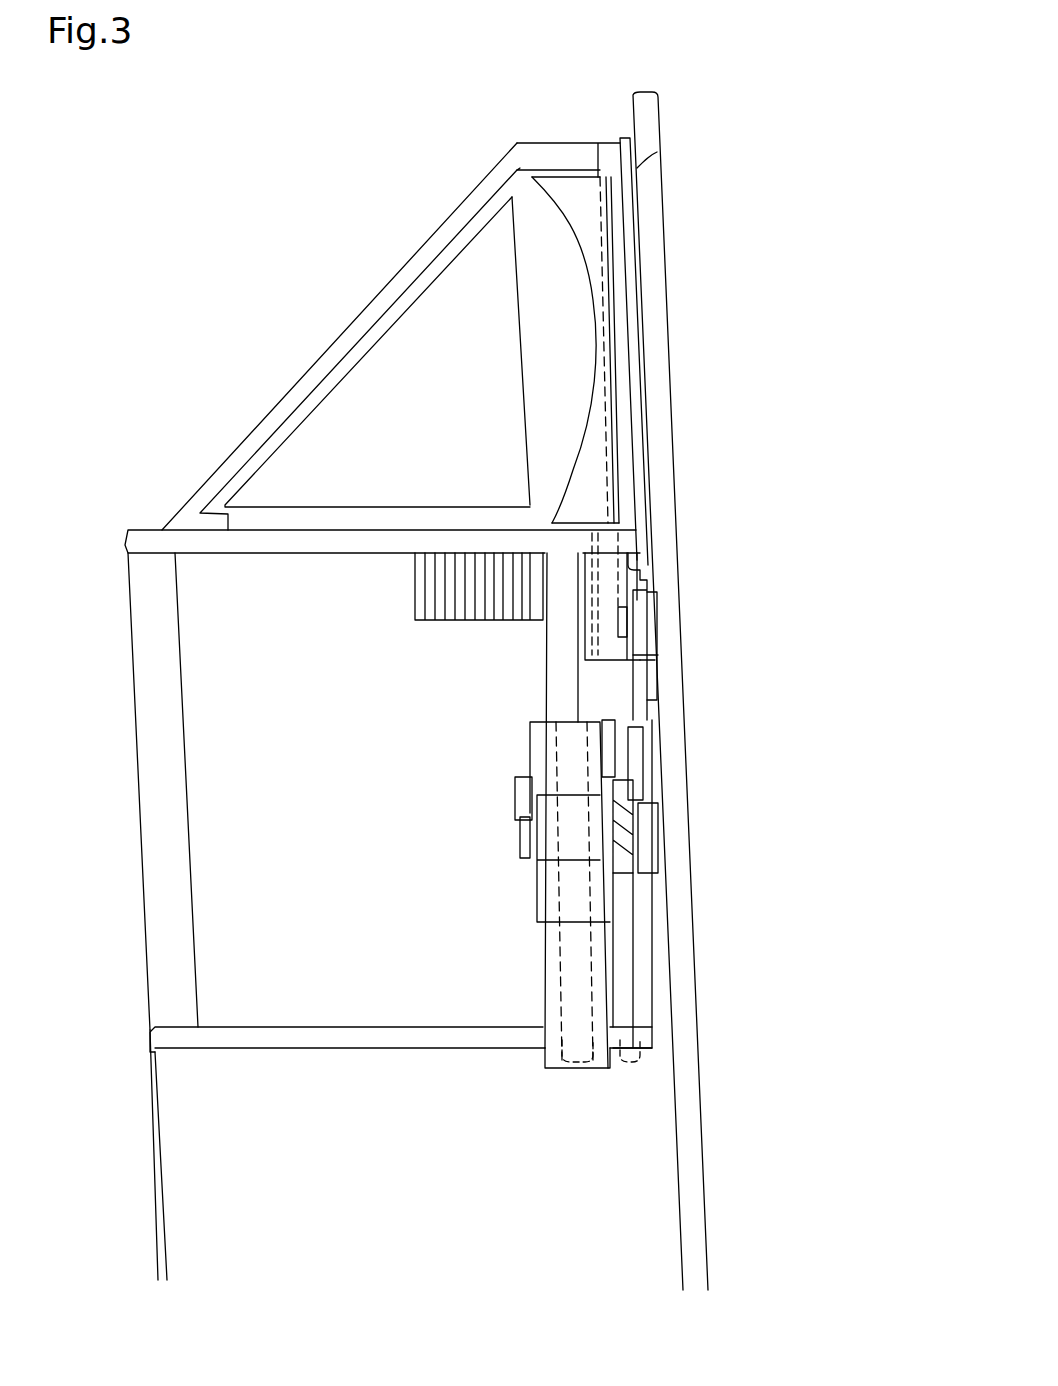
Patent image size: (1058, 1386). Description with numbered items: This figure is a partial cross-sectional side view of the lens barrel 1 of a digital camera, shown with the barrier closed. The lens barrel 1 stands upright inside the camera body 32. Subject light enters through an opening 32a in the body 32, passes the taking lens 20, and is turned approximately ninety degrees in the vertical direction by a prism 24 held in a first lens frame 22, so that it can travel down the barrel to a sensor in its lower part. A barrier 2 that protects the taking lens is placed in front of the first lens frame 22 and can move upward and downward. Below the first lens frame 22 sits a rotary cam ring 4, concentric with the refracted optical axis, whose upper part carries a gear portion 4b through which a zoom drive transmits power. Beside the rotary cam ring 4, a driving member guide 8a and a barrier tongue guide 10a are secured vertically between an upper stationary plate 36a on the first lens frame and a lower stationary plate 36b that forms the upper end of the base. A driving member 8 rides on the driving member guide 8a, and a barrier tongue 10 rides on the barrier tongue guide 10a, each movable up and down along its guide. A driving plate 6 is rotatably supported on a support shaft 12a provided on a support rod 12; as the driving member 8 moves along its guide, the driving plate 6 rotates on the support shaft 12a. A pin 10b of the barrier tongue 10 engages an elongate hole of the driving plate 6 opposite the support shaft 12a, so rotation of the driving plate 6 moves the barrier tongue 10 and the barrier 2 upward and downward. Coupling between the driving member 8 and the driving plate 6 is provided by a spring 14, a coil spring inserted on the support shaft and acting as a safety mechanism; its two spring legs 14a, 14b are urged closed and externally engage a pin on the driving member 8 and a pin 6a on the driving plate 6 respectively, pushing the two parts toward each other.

The lens barrel 1 is at (426, 145).
The barrier 2 is at (627, 200).
The rotary cam ring 4 is at (200, 935).
The gear portion 4b is at (420, 590).
The driving plate 6 is at (650, 665).
The pin 6a is at (640, 810).
The driving member 8 is at (540, 762).
The driving member guide 8a is at (570, 688).
The barrier tongue 10 is at (635, 583).
The barrier tongue guide 10a is at (630, 995).
The pin 10b is at (655, 615).
The support rod 12 is at (548, 990).
The support shaft 12a is at (518, 835).
The spring 14 is at (600, 905).
The spring leg 14a is at (620, 775).
The spring leg 14b is at (628, 735).
The taking lens 20 is at (617, 343).
The first lens frame 22 is at (557, 152).
The prism 24 is at (422, 380).
The body 32 is at (647, 120).
The opening 32a is at (660, 405).
The upper stationary plate 36a is at (148, 540).
The lower stationary plate 36b is at (652, 1052).